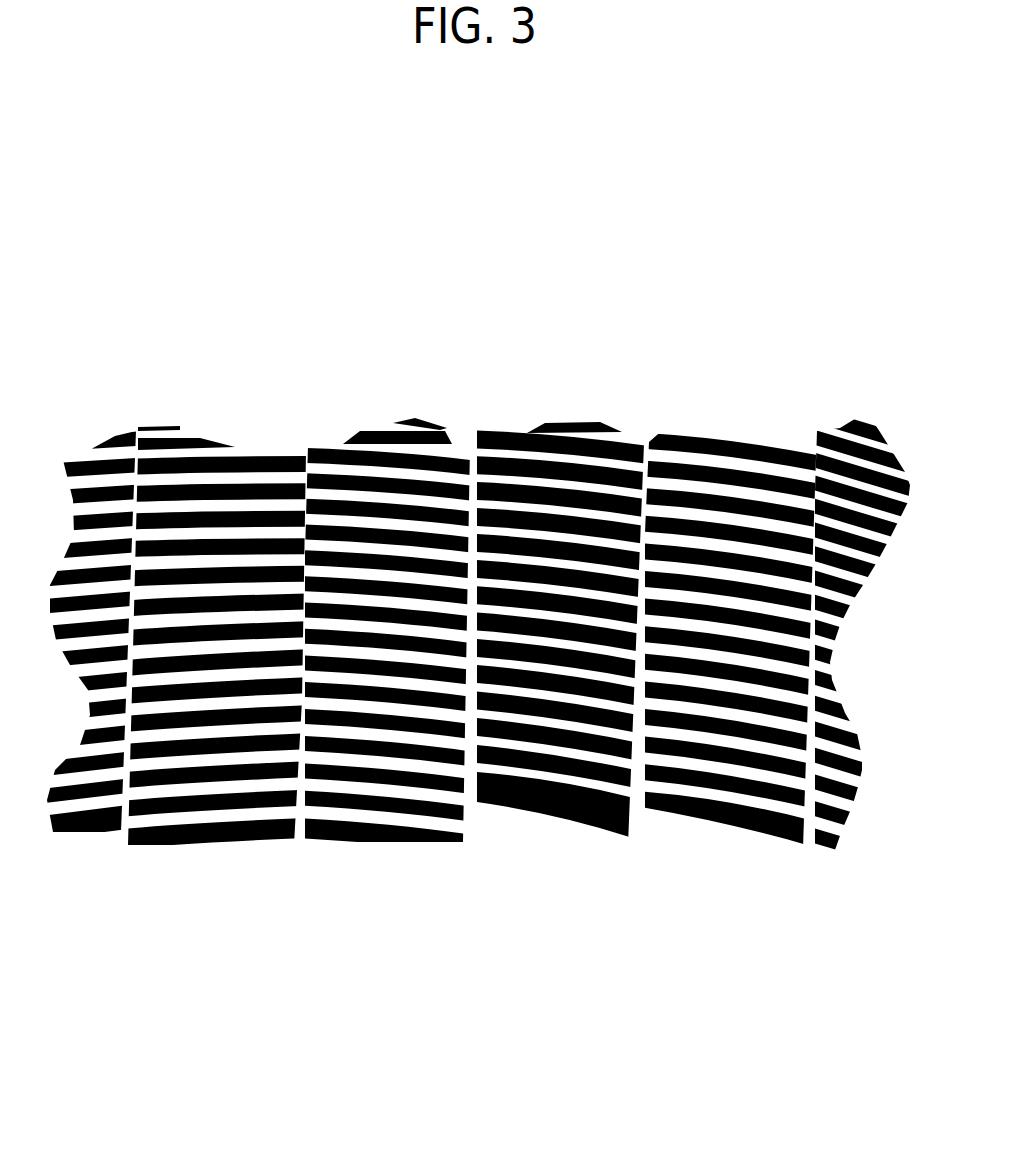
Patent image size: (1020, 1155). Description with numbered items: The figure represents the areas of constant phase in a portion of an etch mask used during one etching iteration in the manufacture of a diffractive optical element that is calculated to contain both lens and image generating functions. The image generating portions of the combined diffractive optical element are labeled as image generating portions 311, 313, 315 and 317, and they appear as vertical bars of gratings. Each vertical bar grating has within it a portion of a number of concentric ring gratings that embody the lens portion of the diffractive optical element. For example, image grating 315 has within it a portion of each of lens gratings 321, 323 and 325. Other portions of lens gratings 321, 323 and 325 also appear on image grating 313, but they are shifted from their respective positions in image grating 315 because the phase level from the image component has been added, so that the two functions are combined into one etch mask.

The image generating portion 311 is at (170, 401).
The image grating 313 is at (351, 403).
The image grating 315 is at (512, 409).
The image generating portion 317 is at (770, 859).
The lens grating 321 is at (332, 772).
The lens grating 323 is at (377, 770).
The lens grating 325 is at (402, 753).